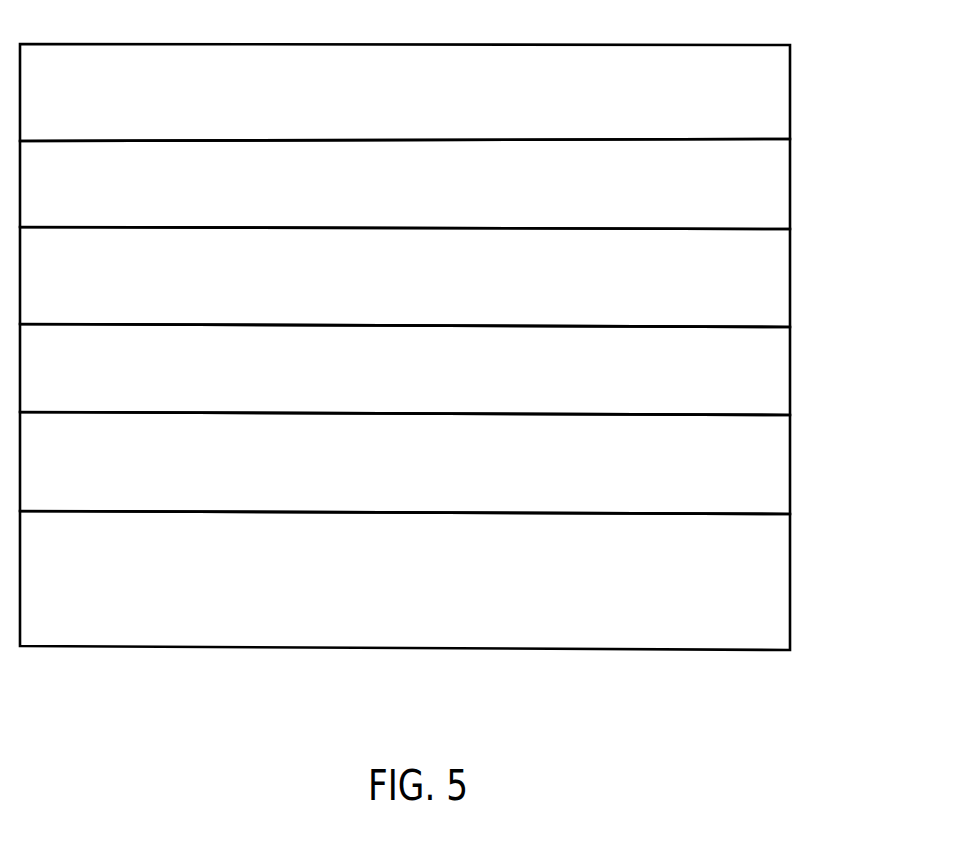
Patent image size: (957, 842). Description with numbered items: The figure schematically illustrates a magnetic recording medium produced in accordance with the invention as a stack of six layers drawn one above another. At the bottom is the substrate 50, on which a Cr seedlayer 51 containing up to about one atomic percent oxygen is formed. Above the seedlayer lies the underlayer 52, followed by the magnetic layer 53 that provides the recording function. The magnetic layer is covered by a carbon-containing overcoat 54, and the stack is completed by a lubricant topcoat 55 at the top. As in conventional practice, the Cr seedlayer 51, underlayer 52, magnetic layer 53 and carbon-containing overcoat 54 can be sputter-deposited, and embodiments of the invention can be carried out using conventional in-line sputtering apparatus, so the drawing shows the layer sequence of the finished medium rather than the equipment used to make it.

The substrate 50 is at (790, 581).
The Cr seedlayer 51 is at (790, 469).
The underlayer 52 is at (790, 374).
The magnetic layer 53 is at (790, 284).
The carbon-containing overcoat 54 is at (790, 188).
The lubricant topcoat 55 is at (790, 99).